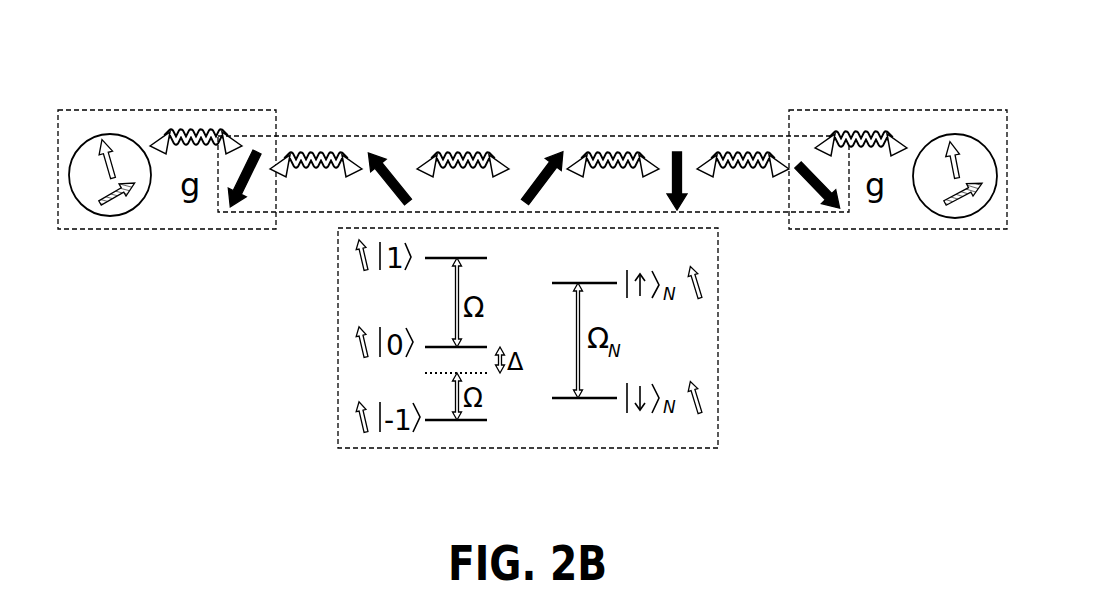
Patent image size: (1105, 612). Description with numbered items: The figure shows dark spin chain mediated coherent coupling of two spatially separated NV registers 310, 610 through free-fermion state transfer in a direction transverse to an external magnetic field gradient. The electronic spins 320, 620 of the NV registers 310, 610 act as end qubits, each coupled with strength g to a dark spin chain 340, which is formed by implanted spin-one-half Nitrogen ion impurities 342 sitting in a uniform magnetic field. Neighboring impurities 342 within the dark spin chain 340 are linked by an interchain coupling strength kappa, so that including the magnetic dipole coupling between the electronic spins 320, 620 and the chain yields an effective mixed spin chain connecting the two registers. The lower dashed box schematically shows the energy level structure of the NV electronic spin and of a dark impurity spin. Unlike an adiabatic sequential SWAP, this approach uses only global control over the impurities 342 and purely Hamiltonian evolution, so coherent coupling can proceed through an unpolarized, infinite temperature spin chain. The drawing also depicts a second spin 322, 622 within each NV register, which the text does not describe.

The NV register 310 is at (80, 207).
The electronic spin 320 is at (110, 143).
The nuclear spin of first NV center 322 is at (130, 198).
The dark spin chain 340 is at (303, 135).
The Nitrogen ion impurities 342 is at (242, 197).
The NV register 610 is at (927, 207).
The electronic spin 620 is at (957, 140).
The nuclear spin of second NV center 622 is at (977, 193).